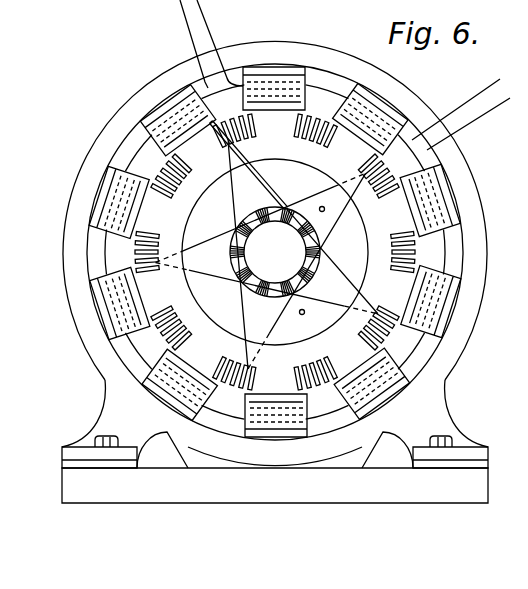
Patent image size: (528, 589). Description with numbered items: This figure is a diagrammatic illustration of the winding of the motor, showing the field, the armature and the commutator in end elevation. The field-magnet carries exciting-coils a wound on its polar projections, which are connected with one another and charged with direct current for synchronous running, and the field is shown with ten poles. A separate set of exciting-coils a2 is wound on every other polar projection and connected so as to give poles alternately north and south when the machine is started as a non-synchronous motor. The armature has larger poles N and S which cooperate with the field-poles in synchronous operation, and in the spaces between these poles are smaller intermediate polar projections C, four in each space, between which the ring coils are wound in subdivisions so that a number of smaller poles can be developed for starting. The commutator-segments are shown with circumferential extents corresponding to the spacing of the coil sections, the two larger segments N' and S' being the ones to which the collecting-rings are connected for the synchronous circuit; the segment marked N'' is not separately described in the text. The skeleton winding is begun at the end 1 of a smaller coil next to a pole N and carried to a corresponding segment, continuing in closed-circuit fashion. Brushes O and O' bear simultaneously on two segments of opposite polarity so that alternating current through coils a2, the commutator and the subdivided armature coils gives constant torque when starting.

The exciting-coils a is at (312, 92).
The separate set of exciting-coils a2 is at (345, 134).
The end of smaller coil 1 is at (219, 141).
The armature north pole N is at (282, 239).
The armature south pole S is at (275, 251).
The intermediate polar projections C is at (275, 245).
The larger commutator-segment N' is at (267, 255).
The larger commutator-segment S' is at (289, 252).
The commutator segment N'' is at (274, 247).
The commutator-brush O is at (325, 226).
The commutator-brush O' is at (286, 313).